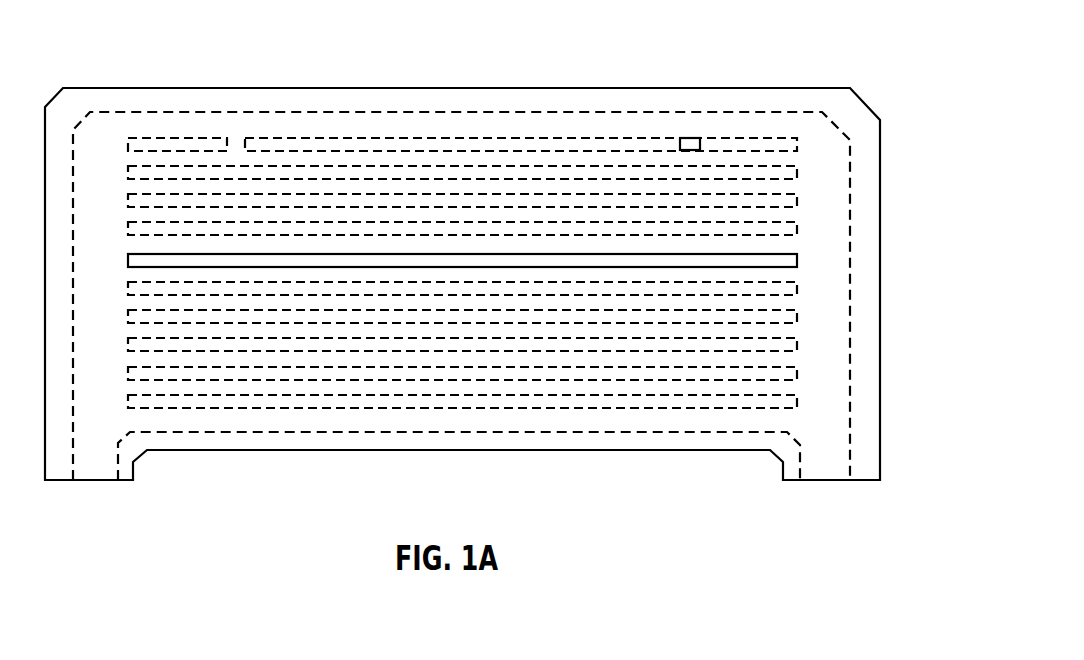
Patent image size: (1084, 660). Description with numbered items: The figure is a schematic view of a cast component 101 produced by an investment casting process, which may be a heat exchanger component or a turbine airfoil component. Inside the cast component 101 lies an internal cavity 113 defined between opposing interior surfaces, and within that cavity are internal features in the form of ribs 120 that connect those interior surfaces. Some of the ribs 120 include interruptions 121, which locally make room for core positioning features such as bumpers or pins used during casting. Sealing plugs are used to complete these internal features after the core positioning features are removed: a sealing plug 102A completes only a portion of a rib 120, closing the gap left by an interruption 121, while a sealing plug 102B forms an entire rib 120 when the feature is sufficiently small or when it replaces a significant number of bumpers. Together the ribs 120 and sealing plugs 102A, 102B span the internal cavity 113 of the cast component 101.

The cast component 101 is at (867, 103).
The internal cavity 113 is at (853, 187).
The rib 120 is at (797, 317).
The interruption 121 is at (235, 137).
The sealing plug 102A is at (690, 137).
The sealing plug 102B is at (798, 260).